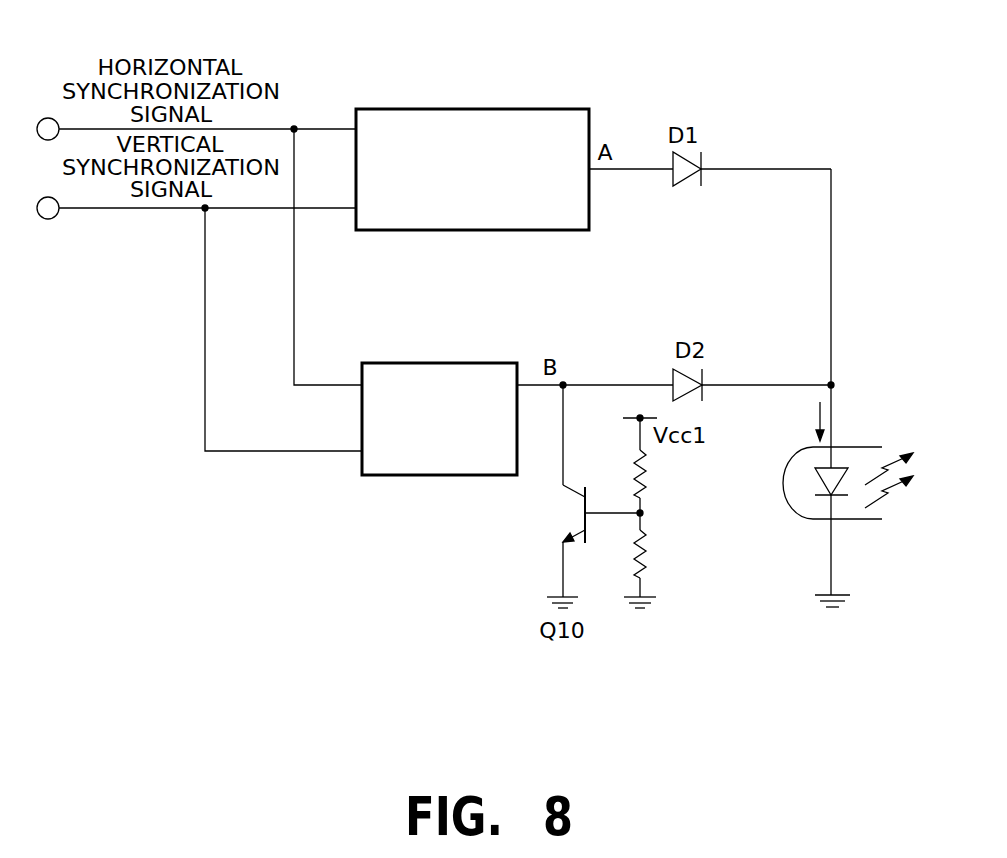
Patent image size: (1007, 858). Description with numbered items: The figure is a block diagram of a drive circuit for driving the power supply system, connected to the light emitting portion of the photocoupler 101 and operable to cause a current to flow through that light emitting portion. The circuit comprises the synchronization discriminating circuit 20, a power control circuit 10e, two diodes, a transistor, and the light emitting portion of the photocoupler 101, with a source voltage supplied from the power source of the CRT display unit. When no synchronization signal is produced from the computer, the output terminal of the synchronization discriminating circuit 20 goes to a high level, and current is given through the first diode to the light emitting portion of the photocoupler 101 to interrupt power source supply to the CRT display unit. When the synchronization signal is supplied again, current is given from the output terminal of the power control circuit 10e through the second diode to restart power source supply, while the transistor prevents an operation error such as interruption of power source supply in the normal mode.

The synchronization discriminating circuit 20 is at (447, 109).
The power control circuit 10e is at (437, 475).
The photocoupler 101 is at (866, 445).